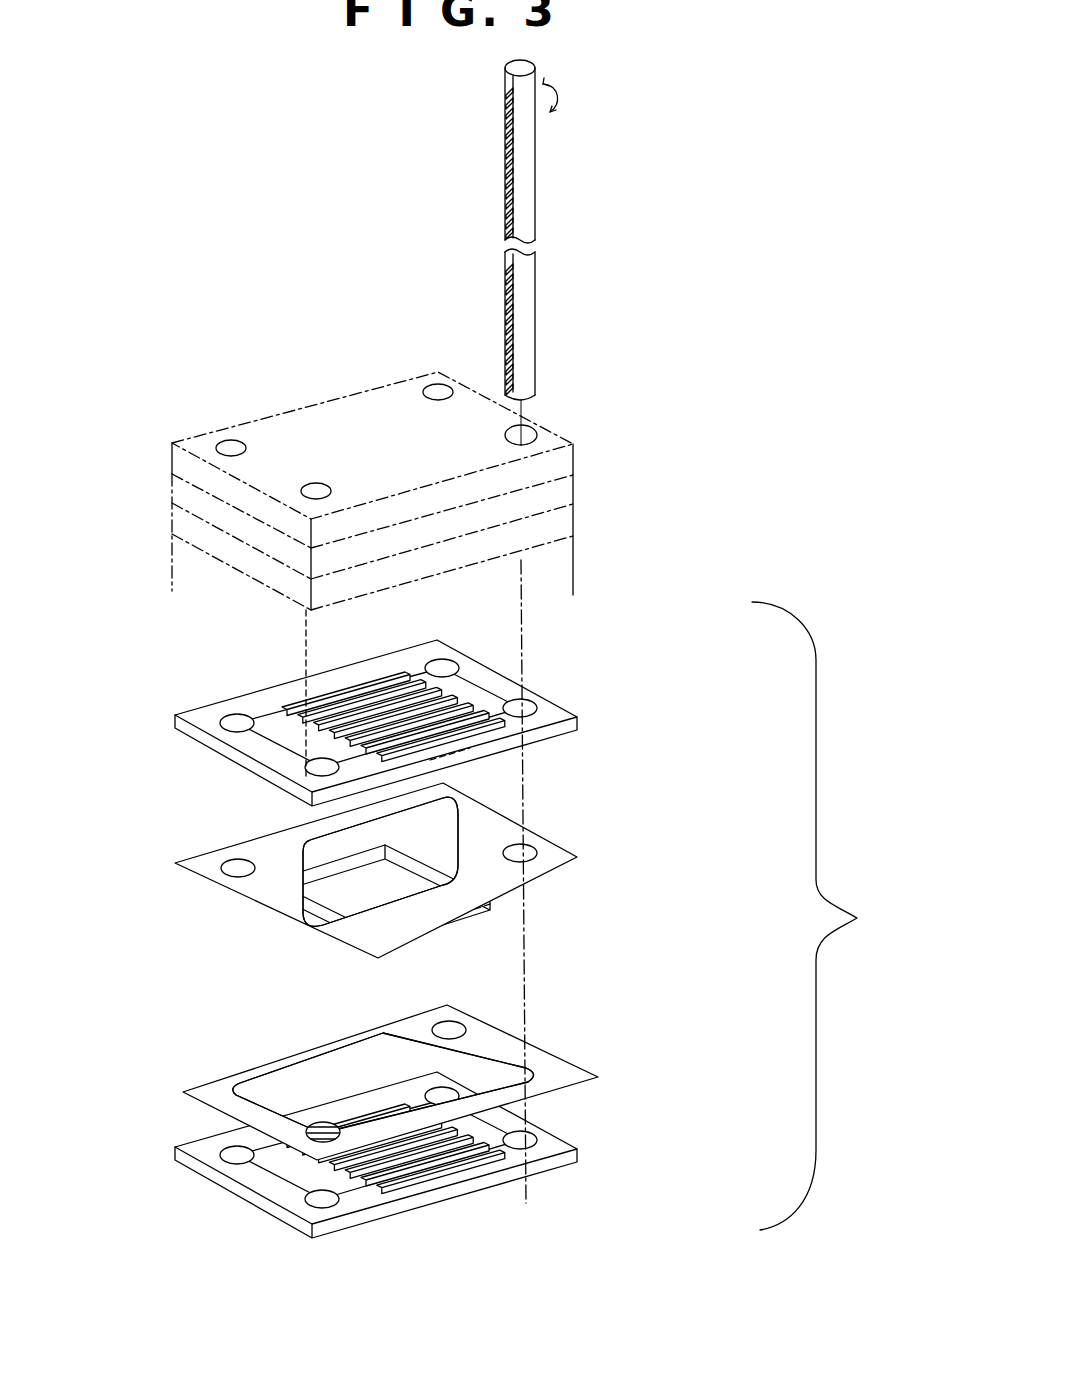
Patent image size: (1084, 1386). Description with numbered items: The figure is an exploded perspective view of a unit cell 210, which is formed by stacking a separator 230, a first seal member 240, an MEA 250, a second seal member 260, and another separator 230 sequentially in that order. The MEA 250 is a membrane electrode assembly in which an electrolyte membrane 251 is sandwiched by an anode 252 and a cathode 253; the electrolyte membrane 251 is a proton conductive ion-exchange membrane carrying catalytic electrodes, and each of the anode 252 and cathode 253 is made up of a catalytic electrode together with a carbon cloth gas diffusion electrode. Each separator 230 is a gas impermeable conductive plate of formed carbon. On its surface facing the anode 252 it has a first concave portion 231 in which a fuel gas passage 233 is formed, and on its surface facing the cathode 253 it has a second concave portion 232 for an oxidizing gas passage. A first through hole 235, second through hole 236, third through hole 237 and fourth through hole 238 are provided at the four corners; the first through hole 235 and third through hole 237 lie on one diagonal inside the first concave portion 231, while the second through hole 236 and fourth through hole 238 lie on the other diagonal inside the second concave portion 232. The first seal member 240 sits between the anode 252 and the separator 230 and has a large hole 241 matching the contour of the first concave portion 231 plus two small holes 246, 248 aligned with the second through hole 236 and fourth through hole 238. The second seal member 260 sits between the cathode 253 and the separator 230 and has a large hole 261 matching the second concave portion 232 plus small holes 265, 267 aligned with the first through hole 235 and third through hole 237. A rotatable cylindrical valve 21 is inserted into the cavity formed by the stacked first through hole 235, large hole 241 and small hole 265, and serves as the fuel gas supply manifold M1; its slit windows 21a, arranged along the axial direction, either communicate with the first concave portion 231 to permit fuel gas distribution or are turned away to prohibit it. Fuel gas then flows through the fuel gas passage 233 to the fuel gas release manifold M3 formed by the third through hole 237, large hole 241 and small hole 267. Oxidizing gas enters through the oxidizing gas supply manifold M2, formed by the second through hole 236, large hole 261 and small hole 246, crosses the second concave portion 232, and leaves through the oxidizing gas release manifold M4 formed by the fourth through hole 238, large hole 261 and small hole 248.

The cylindrical valve 21 is at (509, 252).
The slit window 21a is at (503, 192).
The fuel gas supply manifold M1 is at (537, 434).
The oxidizing gas supply manifold M2 is at (436, 389).
The fuel gas release manifold M3 is at (228, 446).
The oxidizing gas release manifold M4 is at (316, 489).
The unit cell 210 is at (839, 916).
The separator 230 is at (416, 926).
The first concave portion 231 is at (275, 727).
The second concave portion 232 is at (510, 767).
The fuel gas passage 233 is at (327, 697).
The first through hole 235 is at (530, 708).
The second through hole 236 is at (445, 665).
The third through hole 237 is at (225, 720).
The fourth through hole 238 is at (310, 768).
The first seal member 240 is at (453, 1055).
The large hole 241 is at (348, 1058).
The small hole 246 is at (452, 1028).
The small hole 248 is at (318, 1128).
The MEA 250 is at (477, 926).
The electrolyte membrane 251 is at (495, 900).
The anode 252 is at (457, 927).
The cathode 253 is at (338, 933).
The second seal member 260 is at (411, 849).
The large hole 261 is at (320, 852).
The small hole 265 is at (540, 853).
The small hole 267 is at (224, 868).